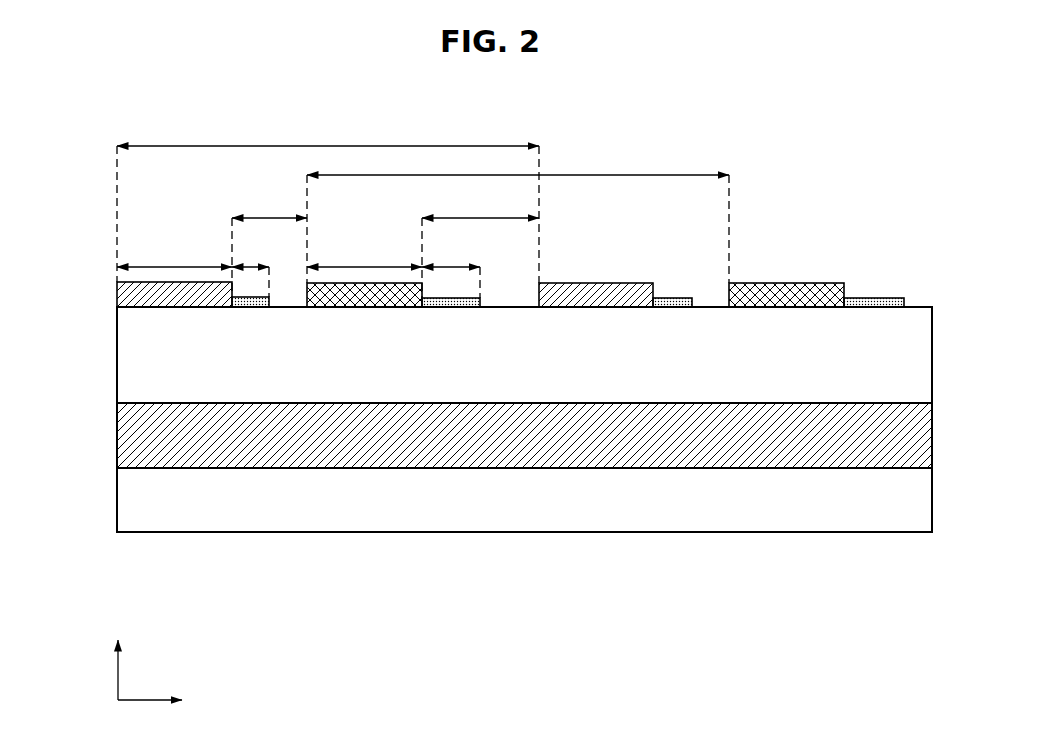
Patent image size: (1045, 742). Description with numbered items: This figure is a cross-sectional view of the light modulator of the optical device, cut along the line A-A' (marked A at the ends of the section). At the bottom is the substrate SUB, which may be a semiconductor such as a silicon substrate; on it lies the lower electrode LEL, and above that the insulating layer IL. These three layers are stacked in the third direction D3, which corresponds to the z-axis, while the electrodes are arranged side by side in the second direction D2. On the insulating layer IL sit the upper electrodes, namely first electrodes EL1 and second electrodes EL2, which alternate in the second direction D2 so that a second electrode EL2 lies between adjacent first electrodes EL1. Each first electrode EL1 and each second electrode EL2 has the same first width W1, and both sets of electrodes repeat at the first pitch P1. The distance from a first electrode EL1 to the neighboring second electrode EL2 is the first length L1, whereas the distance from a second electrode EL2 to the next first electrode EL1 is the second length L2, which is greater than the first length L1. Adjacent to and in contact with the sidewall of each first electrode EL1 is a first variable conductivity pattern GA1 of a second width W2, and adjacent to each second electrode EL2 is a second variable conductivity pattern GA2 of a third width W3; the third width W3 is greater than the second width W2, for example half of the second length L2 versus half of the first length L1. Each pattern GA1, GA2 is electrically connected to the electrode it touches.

The substrate SUB is at (130, 500).
The lower electrode LEL is at (130, 433).
The insulating layer IL is at (130, 355).
The first electrode EL1 is at (174, 296).
The first variable conductivity pattern GA1 is at (249, 300).
The second electrode EL2 is at (364, 296).
The second variable conductivity pattern GA2 is at (456, 300).
The first pitch P1 is at (423, 144).
The first length L1 is at (269, 202).
The second length L2 is at (480, 202).
The first width W1 is at (269, 250).
The second width W2 is at (250, 250).
The third width W3 is at (451, 250).
The line A-A' A is at (529, 552).
The third direction D3 is at (118, 654).
The second direction D2 is at (165, 701).